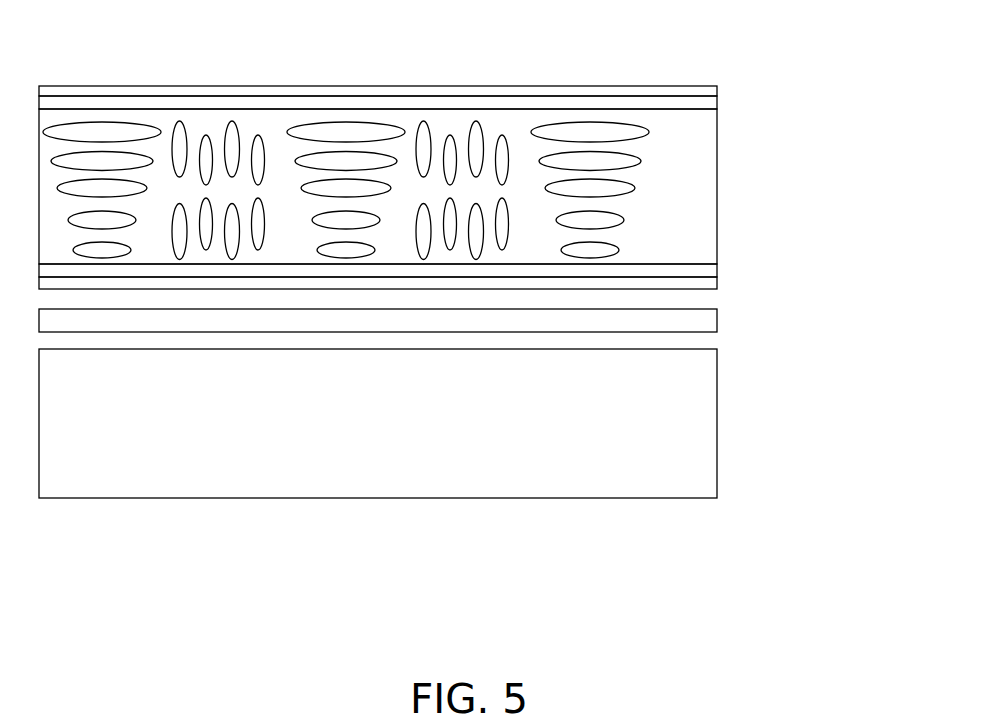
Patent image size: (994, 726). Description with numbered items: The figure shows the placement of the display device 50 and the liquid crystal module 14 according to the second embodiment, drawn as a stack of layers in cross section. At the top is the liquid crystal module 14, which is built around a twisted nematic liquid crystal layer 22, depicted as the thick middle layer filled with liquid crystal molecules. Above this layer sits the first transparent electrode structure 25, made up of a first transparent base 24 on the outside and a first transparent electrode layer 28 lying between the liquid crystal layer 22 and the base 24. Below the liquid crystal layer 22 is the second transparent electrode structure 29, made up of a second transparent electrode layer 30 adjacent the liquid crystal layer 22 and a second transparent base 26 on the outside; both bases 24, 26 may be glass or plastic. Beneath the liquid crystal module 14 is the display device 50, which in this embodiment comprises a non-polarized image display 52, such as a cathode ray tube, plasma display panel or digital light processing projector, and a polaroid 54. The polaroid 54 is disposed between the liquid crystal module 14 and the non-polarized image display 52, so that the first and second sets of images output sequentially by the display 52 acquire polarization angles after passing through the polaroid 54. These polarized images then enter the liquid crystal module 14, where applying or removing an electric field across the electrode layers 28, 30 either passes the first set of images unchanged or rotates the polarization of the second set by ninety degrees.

The liquid crystal module 14 is at (474, 198).
The twisted nematic liquid crystal layer 22 is at (717, 188).
The first transparent base 24 is at (717, 93).
The first transparent electrode structure 25 is at (445, 107).
The second transparent base 26 is at (717, 283).
The first transparent electrode layer 28 is at (717, 103).
The second transparent electrode structure 29 is at (445, 286).
The second transparent electrode layer 30 is at (717, 271).
The display device 50 is at (473, 403).
The non-polarized image display 52 is at (717, 423).
The polaroid 54 is at (717, 318).